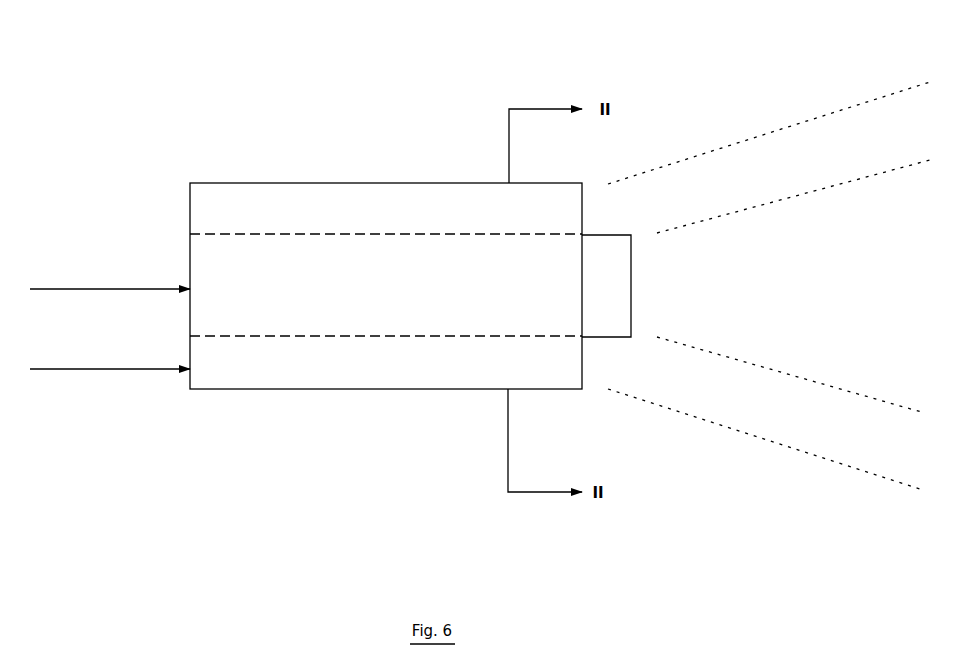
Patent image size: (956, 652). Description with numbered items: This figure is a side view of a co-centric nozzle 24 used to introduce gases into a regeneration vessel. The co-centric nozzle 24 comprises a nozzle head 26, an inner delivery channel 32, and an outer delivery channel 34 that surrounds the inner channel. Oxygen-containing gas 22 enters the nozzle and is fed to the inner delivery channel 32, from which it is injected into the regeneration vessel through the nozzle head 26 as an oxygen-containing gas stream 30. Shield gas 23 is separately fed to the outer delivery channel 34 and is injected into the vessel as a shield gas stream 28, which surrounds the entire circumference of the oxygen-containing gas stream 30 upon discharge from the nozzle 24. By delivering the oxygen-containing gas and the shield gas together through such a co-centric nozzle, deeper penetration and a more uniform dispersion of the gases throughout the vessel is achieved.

The oxygen-containing gas 22 is at (90, 289).
The shield gas 23 is at (90, 369).
The co-centric nozzle 24 is at (388, 183).
The nozzle head 26 is at (607, 286).
The shield gas stream 28 is at (778, 160).
The oxygen-containing gas stream 30 is at (778, 261).
The inner delivery channel 32 is at (387, 287).
The outer delivery channel 34 is at (312, 208).